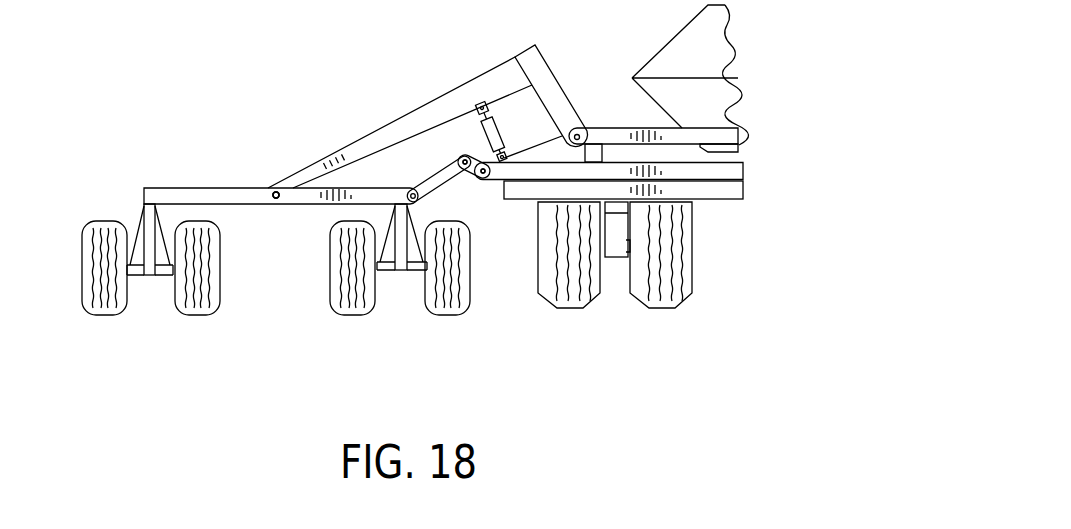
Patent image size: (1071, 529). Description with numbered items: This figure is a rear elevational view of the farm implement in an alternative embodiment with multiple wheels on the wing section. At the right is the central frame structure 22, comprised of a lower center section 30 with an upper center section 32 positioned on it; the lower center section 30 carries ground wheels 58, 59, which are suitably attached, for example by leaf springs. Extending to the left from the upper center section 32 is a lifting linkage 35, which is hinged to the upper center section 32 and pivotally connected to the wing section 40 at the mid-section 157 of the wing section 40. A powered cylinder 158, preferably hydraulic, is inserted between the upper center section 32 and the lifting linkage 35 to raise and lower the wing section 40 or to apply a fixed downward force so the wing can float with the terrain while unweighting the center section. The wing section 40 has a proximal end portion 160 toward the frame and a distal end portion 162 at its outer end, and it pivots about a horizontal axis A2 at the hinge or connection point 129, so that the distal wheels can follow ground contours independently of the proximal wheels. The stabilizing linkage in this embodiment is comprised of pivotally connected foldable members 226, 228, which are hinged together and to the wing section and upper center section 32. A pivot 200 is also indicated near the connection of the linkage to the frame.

The central frame structure 22 is at (742, 162).
The lower center section 30 is at (725, 190).
The upper center section 32 is at (735, 172).
The lifting linkage 35 is at (423, 112).
The wing section 40 is at (203, 192).
The ground wheel 58 is at (557, 308).
The ground wheel 59 is at (680, 307).
The hinge or connection point 129 is at (271, 199).
The mid-section 157 is at (250, 190).
The powered cylinder 158 is at (498, 152).
The proximal end portion 160 is at (392, 193).
The distal end portion 162 is at (146, 191).
The pivot 200 is at (484, 178).
The foldable member 226 is at (429, 193).
The foldable member 228 is at (472, 156).
The horizontal axis A2 is at (280, 199).